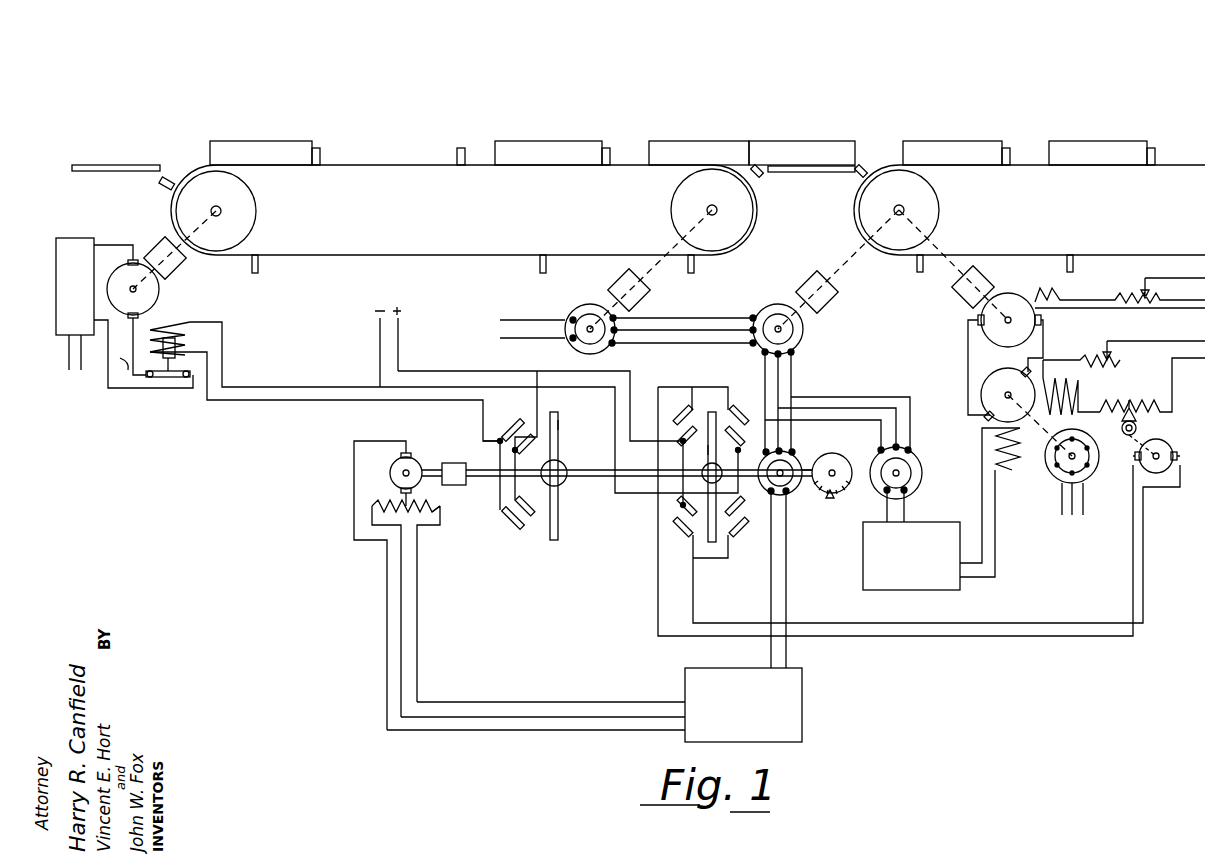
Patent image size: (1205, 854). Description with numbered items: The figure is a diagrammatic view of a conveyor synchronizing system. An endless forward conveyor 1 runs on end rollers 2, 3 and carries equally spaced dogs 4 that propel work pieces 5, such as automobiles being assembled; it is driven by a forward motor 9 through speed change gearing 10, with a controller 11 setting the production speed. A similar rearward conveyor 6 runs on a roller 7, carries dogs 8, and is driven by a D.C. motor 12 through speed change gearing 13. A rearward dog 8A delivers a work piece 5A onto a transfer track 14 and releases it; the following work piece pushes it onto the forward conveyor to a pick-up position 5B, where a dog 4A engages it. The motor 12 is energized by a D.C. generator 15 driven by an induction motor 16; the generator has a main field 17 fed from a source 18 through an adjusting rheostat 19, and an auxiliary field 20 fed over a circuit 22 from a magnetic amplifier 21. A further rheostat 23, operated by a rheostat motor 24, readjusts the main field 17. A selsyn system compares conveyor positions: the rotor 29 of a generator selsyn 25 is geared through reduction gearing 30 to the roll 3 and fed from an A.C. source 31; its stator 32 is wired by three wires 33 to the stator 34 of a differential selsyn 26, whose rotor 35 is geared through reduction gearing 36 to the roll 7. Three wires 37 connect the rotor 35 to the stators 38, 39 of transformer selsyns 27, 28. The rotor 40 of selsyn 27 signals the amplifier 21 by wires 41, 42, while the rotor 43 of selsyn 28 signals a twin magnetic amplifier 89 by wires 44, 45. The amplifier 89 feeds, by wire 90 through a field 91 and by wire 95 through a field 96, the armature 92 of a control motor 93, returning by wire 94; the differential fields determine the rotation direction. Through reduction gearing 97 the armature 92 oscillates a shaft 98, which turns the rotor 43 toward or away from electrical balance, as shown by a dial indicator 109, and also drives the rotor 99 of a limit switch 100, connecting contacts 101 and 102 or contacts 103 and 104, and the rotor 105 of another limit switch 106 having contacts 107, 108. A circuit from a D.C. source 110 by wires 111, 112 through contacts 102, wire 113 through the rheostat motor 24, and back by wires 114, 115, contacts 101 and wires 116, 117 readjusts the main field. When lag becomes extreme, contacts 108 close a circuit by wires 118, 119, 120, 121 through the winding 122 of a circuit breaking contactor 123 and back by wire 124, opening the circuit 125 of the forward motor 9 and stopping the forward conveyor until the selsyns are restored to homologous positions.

The forward conveyor 1 is at (453, 252).
The end roller 2 is at (257, 211).
The end roller 3 is at (671, 209).
The dogs 4 is at (462, 148).
The dog 4A is at (759, 178).
The work piece 5 is at (410, 141).
The work piece 5A is at (830, 141).
The work piece 5B is at (705, 141).
The rearward conveyor 6 is at (1100, 255).
The roller 7 is at (940, 211).
The dogs 8 is at (1012, 148).
The rearward dog 8A is at (860, 180).
The forward motor 9 is at (159, 289).
The speed change gearing 10 is at (176, 268).
The controller 11 is at (75, 304).
The D.C. motor 12 is at (1010, 295).
The speed change gearing 13 is at (979, 280).
The transfer track 14 is at (805, 172).
The D.C. generator 15 is at (1005, 370).
The induction motor 16 is at (1090, 478).
The main field 17 is at (1078, 393).
The source of D.C. 18 is at (1175, 346).
The adjusting rheostat 19 is at (1098, 356).
The auxiliary field 20 is at (1008, 456).
The magnetic amplifier 21 is at (911, 556).
The circuit 22 is at (985, 524).
The rheostat 23 is at (1121, 423).
The rheostat motor 24 is at (1134, 452).
The generator selsyn 25 is at (590, 313).
The differential selsyn 26 is at (778, 312).
The transformer selsyn 27 is at (880, 456).
The transformer selsyn 28 is at (794, 460).
The rotor 29 is at (572, 319).
The reduction gearing 30 is at (633, 276).
The source of A.C. 31 is at (500, 322).
The stator 32 is at (612, 346).
The three wires 33 is at (690, 343).
The stator 34 is at (802, 342).
The rotor 35 is at (762, 318).
The reduction gearing 36 is at (820, 280).
The three wires 37 is at (770, 392).
The stator 38 is at (920, 484).
The stator 39 is at (790, 496).
The rotor 40 is at (921, 462).
The wire 41 is at (885, 507).
The wire 42 is at (907, 507).
The rotor 43 is at (800, 460).
The wire 44 is at (769, 572).
The wire 45 is at (788, 572).
The twin magnetic amplifier 89 is at (743, 705).
The wire 90 is at (537, 702).
The field 91 is at (440, 506).
The armature 92 is at (413, 462).
The control motor 93 is at (390, 473).
The wire 94 is at (533, 731).
The wire 95 is at (573, 716).
The field 96 is at (372, 510).
The reduction gearing 97 is at (454, 463).
The shaft 98 is at (585, 480).
The rotor 99 is at (708, 450).
The limit switch 100 is at (744, 408).
The contacts 101 is at (739, 458).
The contacts 102 is at (678, 514).
The contacts 103 is at (688, 418).
The contacts 104 is at (736, 502).
The rotor 105 is at (558, 437).
The limit switch 106 is at (570, 420).
The contacts 107 is at (510, 436).
The contacts 108 is at (514, 522).
The dial indicator 109 is at (840, 462).
The source of D.C. 110 is at (401, 325).
The wire 111 is at (476, 372).
The wire 112 is at (684, 458).
The wire 113 is at (727, 623).
The wire 114 is at (657, 597).
The wire 115 is at (700, 387).
The wire 116 is at (716, 450).
The wire 117 is at (632, 505).
The wire 118 is at (537, 398).
The wire 119 is at (524, 448).
The wire 120 is at (500, 493).
The wire 121 is at (400, 400).
The winding 122 is at (186, 343).
The circuit breaking contactor 123 is at (165, 390).
The wire 124 is at (288, 382).
The circuit 125 is at (118, 355).